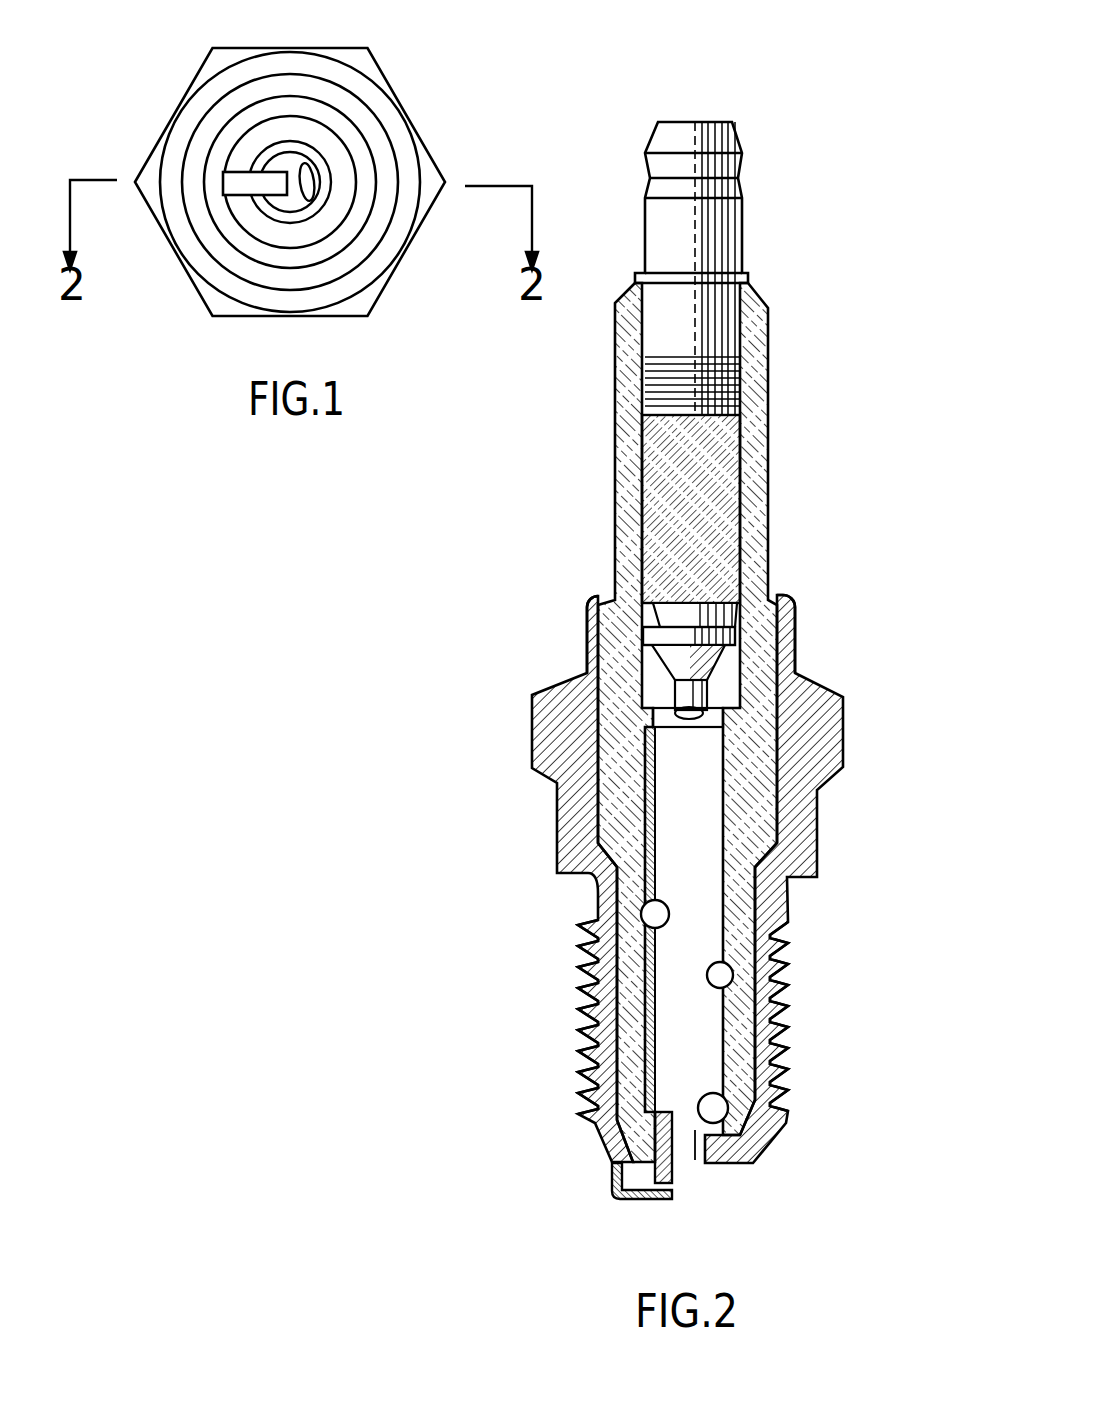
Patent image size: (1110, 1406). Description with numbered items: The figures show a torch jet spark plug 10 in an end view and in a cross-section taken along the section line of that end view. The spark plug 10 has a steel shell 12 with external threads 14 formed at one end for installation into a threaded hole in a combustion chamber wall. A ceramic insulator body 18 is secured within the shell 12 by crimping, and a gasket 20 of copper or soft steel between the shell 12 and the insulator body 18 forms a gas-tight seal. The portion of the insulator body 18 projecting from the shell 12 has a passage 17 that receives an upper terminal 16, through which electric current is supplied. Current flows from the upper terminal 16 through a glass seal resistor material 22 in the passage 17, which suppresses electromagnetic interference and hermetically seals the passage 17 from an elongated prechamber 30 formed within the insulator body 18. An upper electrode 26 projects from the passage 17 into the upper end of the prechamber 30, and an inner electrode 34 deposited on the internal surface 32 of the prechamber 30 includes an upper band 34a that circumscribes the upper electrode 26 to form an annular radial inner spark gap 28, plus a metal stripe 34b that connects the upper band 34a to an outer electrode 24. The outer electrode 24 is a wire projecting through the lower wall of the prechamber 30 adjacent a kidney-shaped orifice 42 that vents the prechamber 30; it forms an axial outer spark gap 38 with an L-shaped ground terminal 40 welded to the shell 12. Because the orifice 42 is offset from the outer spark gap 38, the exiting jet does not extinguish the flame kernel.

In FIG. 1, the torch jet spark plug 10 is at (118, 125).
In FIG. 2, the torch jet spark plug 10 is at (801, 400).
In FIG. 1, the shell 12 is at (412, 178).
In FIG. 2, the shell 12 is at (558, 712).
In FIG. 2, the external threads 14 is at (583, 1007).
In FIG. 2, the upper terminal 16 is at (738, 187).
In FIG. 2, the passage 17 is at (647, 497).
In FIG. 1, the insulator body 18 is at (307, 157).
In FIG. 2, the insulator body 18 is at (617, 467).
In FIG. 2, the gasket 20 is at (607, 598).
In FIG. 2, the resistor material 22 is at (713, 485).
In FIG. 1, the outer electrode 24 is at (248, 197).
In FIG. 2, the outer electrode 24 is at (673, 1173).
In FIG. 2, the upper electrode 26 is at (738, 602).
In FIG. 2, the inner spark gap 28 is at (677, 683).
In FIG. 2, the prechamber 30 is at (690, 943).
In FIG. 2, the internal surface 32 is at (733, 958).
In FIG. 2, the inner electrode 34 is at (662, 828).
In FIG. 2, the upper band 34a is at (730, 685).
In FIG. 2, the stripe 34b is at (617, 902).
In FIG. 2, the outer spark gap 38 is at (675, 1187).
In FIG. 1, the ground terminal 40 is at (235, 170).
In FIG. 2, the ground terminal 40 is at (620, 1193).
In FIG. 1, the orifice 42 is at (320, 183).
In FIG. 2, the orifice 42 is at (748, 1093).